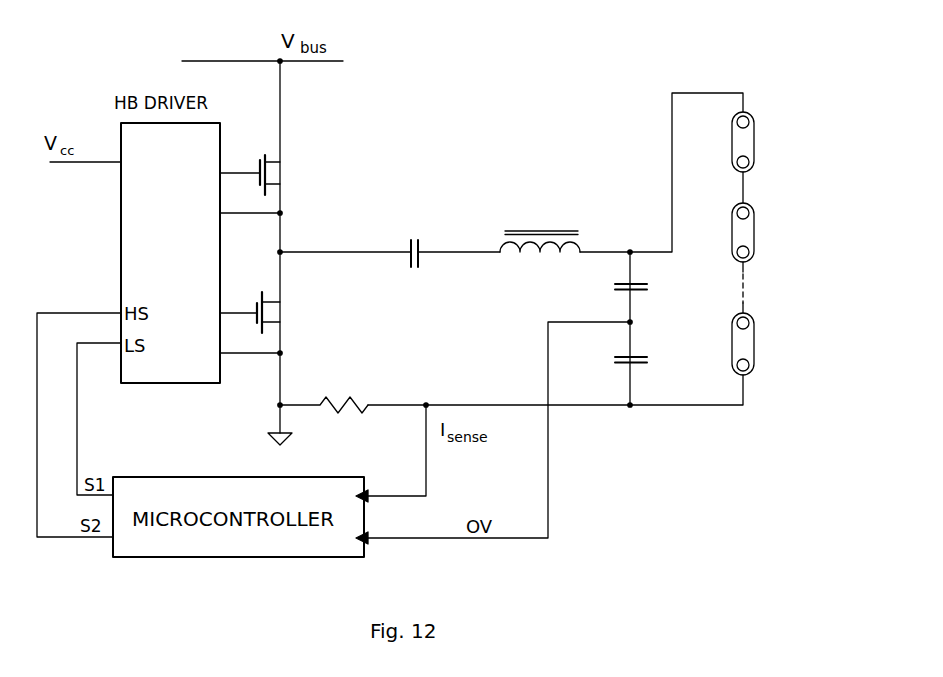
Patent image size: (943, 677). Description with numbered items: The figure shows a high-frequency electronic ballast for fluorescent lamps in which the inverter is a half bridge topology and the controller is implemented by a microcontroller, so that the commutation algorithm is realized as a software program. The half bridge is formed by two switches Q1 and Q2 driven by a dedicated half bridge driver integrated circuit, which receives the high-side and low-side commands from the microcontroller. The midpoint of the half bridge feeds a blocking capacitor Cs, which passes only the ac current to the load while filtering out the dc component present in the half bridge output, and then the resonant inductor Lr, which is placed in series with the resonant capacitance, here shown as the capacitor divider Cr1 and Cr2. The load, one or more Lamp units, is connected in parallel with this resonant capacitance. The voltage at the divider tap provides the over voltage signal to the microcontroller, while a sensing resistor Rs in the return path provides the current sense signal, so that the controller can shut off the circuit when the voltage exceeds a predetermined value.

The high-side switching transistor Q1 is at (267, 169).
The low-side switching transistor Q2 is at (266, 307).
The blocking capacitor Cs is at (414, 239).
The inductor Lr is at (540, 228).
The resonant capacitor 1 Cr1 is at (612, 287).
The resonant capacitor 2 Cr2 is at (610, 363).
The current sense resistor Rs is at (324, 391).
The lamp Lamp is at (776, 243).